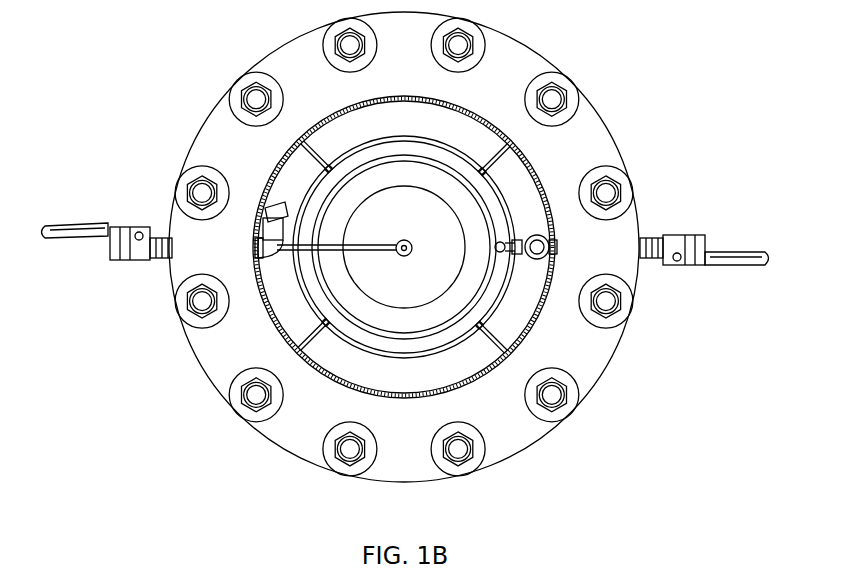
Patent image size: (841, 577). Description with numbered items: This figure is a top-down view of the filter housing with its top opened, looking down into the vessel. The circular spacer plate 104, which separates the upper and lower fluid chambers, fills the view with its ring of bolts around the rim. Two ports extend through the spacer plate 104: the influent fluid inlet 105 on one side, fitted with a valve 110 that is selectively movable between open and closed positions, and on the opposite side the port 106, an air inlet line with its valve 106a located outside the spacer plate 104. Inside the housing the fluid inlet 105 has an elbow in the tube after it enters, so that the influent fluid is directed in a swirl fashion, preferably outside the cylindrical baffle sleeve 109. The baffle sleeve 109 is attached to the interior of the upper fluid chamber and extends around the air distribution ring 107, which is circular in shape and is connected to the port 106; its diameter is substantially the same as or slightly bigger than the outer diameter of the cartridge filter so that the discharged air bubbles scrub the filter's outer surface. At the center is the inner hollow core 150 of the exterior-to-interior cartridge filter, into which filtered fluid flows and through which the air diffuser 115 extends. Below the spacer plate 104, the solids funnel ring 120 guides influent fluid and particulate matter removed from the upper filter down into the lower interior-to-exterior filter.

The spacer plate 104 is at (527, 437).
The fluid inlet 105 is at (273, 228).
The port 106 is at (708, 245).
The valve 106a is at (722, 262).
The air distribution ring 107 is at (505, 238).
The baffle sleeve 109 is at (505, 197).
The valve 110 is at (92, 227).
The air diffuser 115 is at (411, 252).
The solids funnel ring 120 is at (363, 310).
The inner hollow core 150 is at (372, 284).